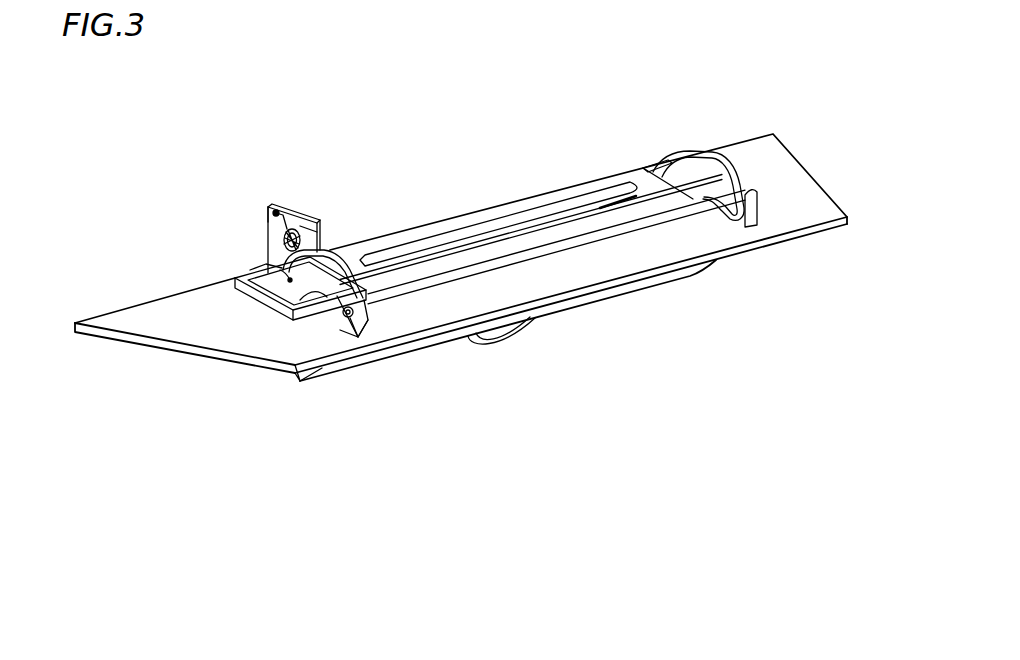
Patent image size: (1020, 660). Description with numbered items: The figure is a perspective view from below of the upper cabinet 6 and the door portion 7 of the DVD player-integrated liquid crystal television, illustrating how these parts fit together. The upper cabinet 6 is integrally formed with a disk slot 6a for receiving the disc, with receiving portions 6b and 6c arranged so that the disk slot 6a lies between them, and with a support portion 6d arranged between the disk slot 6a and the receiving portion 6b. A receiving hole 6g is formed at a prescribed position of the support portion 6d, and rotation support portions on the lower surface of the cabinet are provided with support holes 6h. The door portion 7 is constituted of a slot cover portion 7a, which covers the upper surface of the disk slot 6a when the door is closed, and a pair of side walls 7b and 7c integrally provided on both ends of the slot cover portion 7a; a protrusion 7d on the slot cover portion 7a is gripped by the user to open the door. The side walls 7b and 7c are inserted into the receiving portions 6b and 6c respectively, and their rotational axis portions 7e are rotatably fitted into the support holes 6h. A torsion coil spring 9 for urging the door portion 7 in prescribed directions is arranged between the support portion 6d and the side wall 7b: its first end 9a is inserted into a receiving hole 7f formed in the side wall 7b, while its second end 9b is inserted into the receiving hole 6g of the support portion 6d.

The upper cabinet 6 is at (773, 147).
The disk slot 6a is at (504, 226).
The receiving portion 6b is at (263, 277).
The receiving portion 6c is at (662, 162).
The support portion 6d is at (300, 227).
The receiving hole 6g is at (273, 207).
The support hole 6h is at (345, 317).
The door portion 7 is at (663, 282).
The slot cover portion 7a is at (568, 309).
The side wall 7b is at (323, 263).
The side wall 7c is at (700, 168).
The protrusion 7d is at (500, 336).
The rotational axis portion 7e is at (370, 318).
The receiving hole 7f is at (267, 263).
The torsion coil spring 9 is at (273, 243).
The first end 9a is at (290, 282).
The second end 9b is at (277, 212).